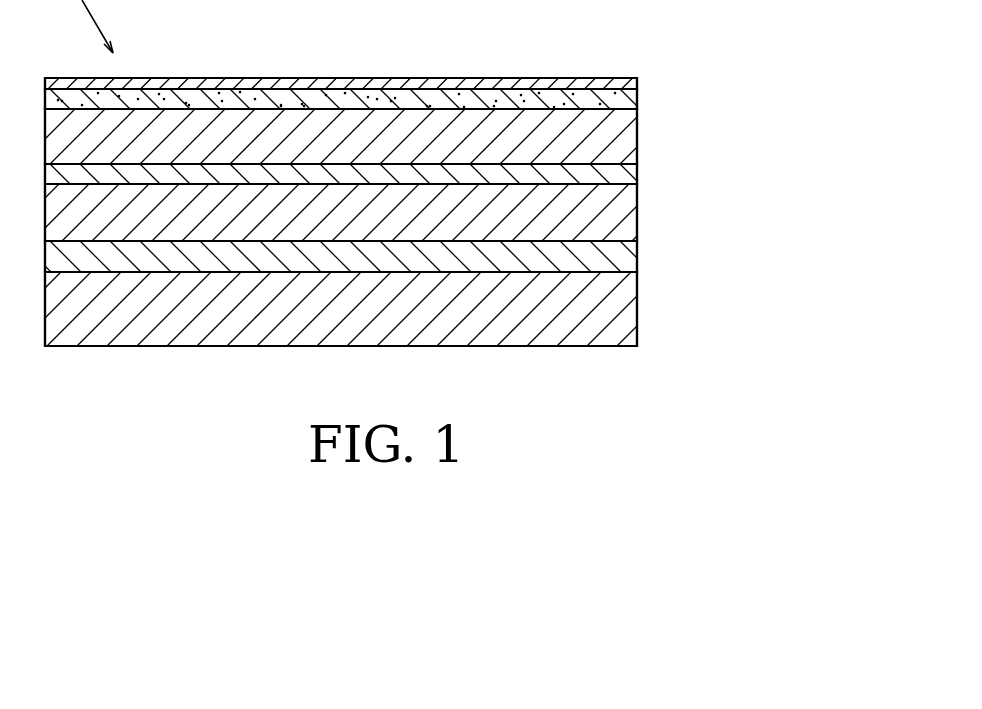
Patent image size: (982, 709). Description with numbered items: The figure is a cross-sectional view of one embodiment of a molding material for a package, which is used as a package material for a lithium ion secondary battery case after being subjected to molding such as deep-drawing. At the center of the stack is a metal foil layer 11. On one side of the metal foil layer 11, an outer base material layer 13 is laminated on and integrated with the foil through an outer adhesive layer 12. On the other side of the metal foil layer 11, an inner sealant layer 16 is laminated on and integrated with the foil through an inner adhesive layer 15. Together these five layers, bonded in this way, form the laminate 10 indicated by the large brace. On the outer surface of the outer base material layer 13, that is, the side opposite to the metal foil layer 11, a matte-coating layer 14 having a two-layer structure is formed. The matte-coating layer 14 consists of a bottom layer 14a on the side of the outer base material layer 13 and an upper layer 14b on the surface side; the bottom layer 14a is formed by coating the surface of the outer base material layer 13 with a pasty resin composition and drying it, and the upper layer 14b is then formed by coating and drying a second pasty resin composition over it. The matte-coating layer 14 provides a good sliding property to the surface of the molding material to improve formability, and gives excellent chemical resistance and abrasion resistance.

The laminate 10 is at (755, 110).
The metal foil layer 11 is at (613, 213).
The outer adhesive layer 12 is at (617, 180).
The outer base material layer 13 is at (623, 143).
The matte-coating layer 14 is at (773, 18).
The bottom layer 14a is at (622, 100).
The upper layer 14b is at (637, 83).
The inner adhesive layer 15 is at (617, 255).
The inner sealant layer 16 is at (613, 303).